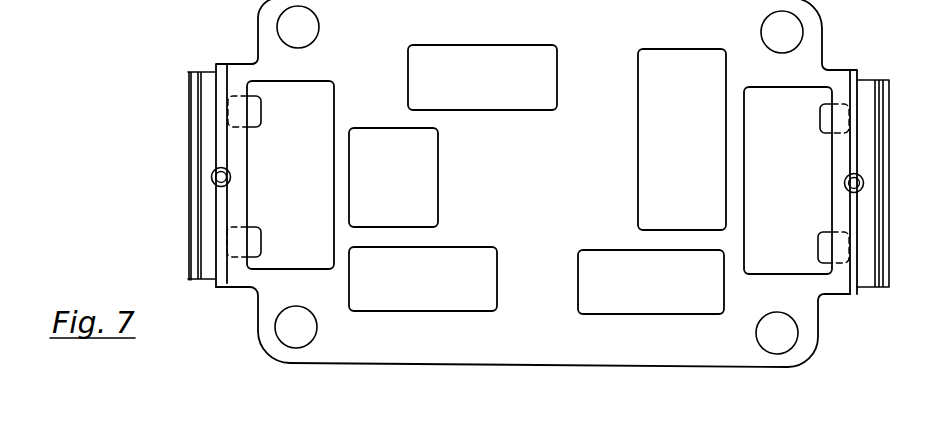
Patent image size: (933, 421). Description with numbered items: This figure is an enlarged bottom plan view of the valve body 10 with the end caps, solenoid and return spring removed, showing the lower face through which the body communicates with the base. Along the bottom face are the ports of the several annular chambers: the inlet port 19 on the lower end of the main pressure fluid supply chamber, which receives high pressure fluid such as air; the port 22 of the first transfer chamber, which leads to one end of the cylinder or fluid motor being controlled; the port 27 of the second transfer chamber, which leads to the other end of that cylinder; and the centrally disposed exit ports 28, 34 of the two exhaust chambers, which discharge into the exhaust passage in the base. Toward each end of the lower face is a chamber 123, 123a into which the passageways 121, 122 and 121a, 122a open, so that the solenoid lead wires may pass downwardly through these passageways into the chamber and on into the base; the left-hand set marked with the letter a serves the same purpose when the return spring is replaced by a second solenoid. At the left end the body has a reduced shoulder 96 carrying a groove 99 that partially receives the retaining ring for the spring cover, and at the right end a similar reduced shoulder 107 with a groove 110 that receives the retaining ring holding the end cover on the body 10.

The valve body 10 is at (826, 44).
The inlet port 19 is at (522, 47).
The port 22 is at (462, 248).
The port 27 is at (612, 252).
The exit port 28 is at (436, 154).
The exit port 34 is at (639, 131).
The reduced shoulder 96 is at (213, 73).
The groove 99 is at (195, 157).
The reduced shoulder 107 is at (866, 82).
The groove 110 is at (879, 207).
The passageway 121 is at (821, 251).
The passageway 121a is at (258, 237).
The passageway 122 is at (822, 116).
The passageway 122a is at (259, 109).
The chamber 123 is at (747, 165).
The chamber 123a is at (338, 105).